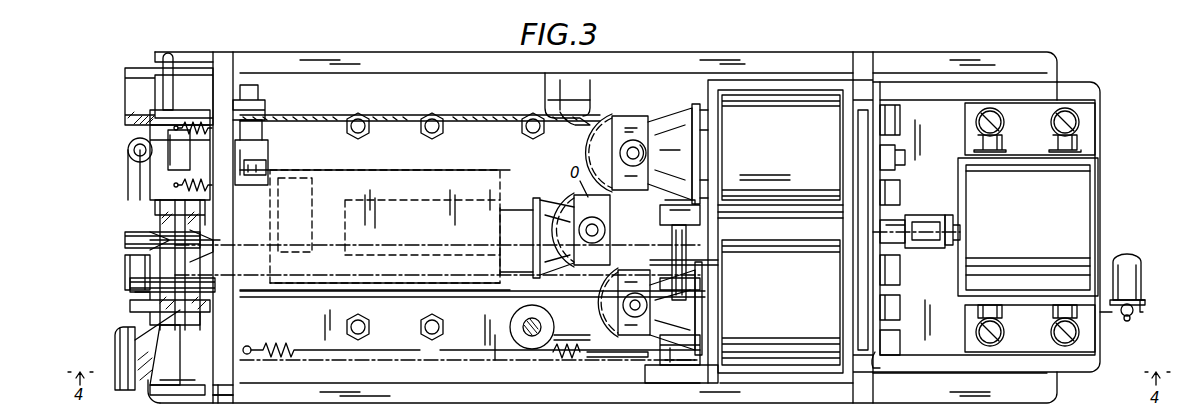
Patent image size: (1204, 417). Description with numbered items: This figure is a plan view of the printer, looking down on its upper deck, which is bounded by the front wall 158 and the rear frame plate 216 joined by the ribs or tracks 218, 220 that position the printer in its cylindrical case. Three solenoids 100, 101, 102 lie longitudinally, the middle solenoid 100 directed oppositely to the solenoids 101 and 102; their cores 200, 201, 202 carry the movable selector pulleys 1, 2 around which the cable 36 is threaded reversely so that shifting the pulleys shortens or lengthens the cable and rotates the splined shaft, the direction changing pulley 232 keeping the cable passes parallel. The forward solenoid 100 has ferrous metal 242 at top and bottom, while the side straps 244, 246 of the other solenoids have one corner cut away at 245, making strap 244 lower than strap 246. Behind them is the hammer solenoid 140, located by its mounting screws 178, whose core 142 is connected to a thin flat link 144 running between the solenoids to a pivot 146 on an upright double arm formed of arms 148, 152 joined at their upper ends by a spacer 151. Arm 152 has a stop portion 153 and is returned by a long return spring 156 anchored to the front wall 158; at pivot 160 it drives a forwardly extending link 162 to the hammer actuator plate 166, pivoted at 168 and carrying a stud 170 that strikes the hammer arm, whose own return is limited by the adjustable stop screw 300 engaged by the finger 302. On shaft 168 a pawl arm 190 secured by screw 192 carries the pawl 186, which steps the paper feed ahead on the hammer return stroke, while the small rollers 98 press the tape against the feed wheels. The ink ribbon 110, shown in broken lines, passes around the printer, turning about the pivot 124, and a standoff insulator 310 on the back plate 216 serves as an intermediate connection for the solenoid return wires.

The movable selector pulley 1 is at (600, 300).
The movable selector pulley 2 is at (640, 117).
The cable 36 is at (323, 114).
The small rollers 98 is at (128, 150).
The forward solenoid 100 is at (424, 233).
The solenoid 101 is at (808, 323).
The solenoid 102 is at (794, 151).
The ink ribbon 110 is at (262, 266).
The pivot 124 is at (1130, 300).
The hammer solenoid 140 is at (1040, 215).
The core 142 is at (948, 215).
The thin flat link 144 is at (766, 230).
The pivot 146 is at (765, 197).
The arm 148 is at (678, 238).
The spacer 151 is at (688, 272).
The arm 152 is at (692, 325).
The stop portion 153 is at (622, 360).
The long return spring 156 is at (270, 351).
The front wall 158 is at (226, 396).
The pivot 160 is at (678, 345).
The forwardly extending link 162 is at (406, 298).
The hammer actuator plate 166 is at (130, 305).
The pivot 168 is at (150, 328).
The sidewardly projecting stud 170 is at (130, 280).
The mounting screws 178 is at (997, 123).
The pawl 186 is at (263, 183).
The pawl arm 190 is at (195, 190).
The screw 192 is at (140, 200).
The core 200 is at (512, 205).
The core 201 is at (724, 306).
The core 202 is at (698, 130).
The rear frame plate 216 is at (866, 62).
The rib 218 is at (423, 57).
The rib 220 is at (410, 393).
The direction changing pulley 232 is at (580, 128).
The ferrous metal 242 is at (448, 176).
The ferrous strap 244 is at (805, 87).
The cut-away corner 245 is at (850, 362).
The ferrous strap 246 is at (814, 210).
The adjustable stop screw 300 is at (150, 245).
The finger 302 is at (175, 262).
The standoff insulator 310 is at (898, 220).